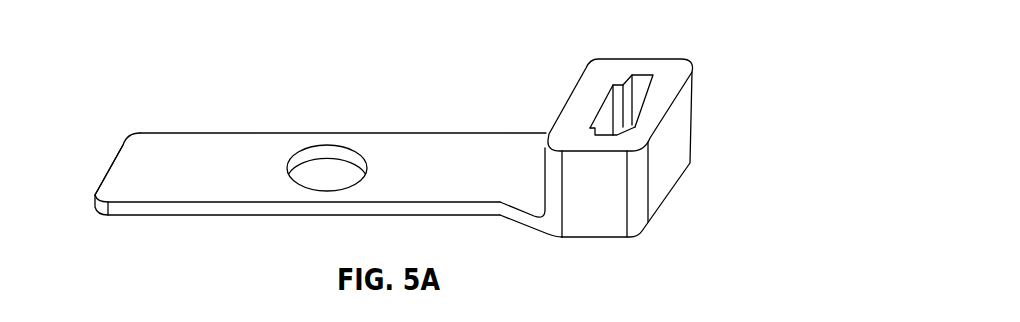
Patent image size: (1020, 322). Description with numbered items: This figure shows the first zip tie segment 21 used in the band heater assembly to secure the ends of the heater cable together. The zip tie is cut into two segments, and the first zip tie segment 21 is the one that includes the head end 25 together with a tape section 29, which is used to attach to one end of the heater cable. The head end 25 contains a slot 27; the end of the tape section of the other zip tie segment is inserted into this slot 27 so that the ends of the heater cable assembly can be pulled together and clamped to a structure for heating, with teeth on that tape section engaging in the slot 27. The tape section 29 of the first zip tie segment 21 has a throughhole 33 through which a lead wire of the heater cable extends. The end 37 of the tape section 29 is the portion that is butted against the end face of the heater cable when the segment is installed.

The first zip tie segment 21 is at (330, 80).
The head end 25 is at (638, 58).
The slot 27 is at (605, 118).
The tape section 29 is at (174, 145).
The throughhole 33 is at (345, 155).
The end of the tape section 37 is at (113, 160).